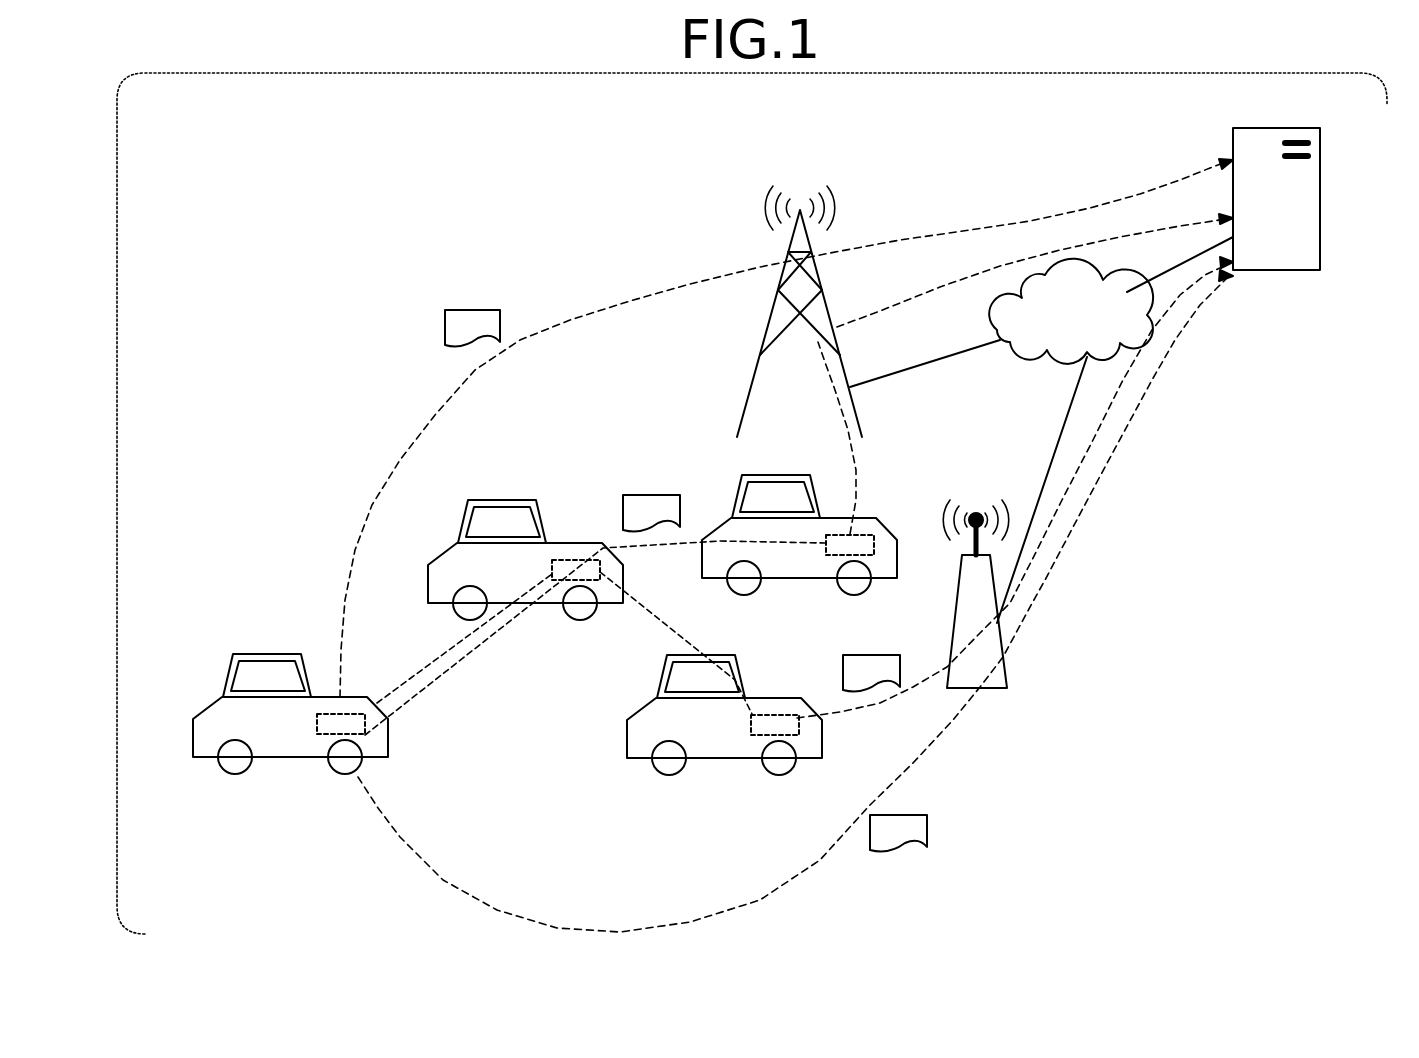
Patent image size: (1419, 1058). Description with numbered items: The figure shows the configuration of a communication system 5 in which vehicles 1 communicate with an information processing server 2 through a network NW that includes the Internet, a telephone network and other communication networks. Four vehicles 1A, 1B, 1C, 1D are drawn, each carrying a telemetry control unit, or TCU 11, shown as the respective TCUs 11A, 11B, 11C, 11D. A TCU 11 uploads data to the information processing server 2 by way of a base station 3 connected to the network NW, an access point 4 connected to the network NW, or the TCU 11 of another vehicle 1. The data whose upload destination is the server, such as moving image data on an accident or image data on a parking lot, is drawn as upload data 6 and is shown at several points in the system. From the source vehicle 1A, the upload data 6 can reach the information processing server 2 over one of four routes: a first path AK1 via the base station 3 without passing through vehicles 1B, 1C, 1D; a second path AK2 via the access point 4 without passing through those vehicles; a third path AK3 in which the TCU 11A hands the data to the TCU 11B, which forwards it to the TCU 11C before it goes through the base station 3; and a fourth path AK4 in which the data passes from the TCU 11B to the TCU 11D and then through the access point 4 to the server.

The vehicle 1 is at (290, 713).
The vehicle 1A is at (248, 653).
The vehicle 1B is at (480, 500).
The vehicle 1C is at (758, 475).
The vehicle 1D is at (632, 760).
The telemetry control unit (TCU) 11 is at (318, 768).
The TCU 11A is at (320, 734).
The TCU 11B is at (548, 585).
The TCU 11C is at (856, 534).
The TCU 11D is at (751, 737).
The information processing server 2 is at (1273, 127).
The base station 3 is at (818, 272).
The access point 4 is at (1007, 681).
The communication system 5 is at (489, 186).
The upload data 6 is at (472, 309).
The network NW is at (1030, 350).
The first path AK1 is at (1017, 222).
The second path AK2 is at (1167, 358).
The third path AK3 is at (1030, 258).
The fourth path AK4 is at (1186, 298).